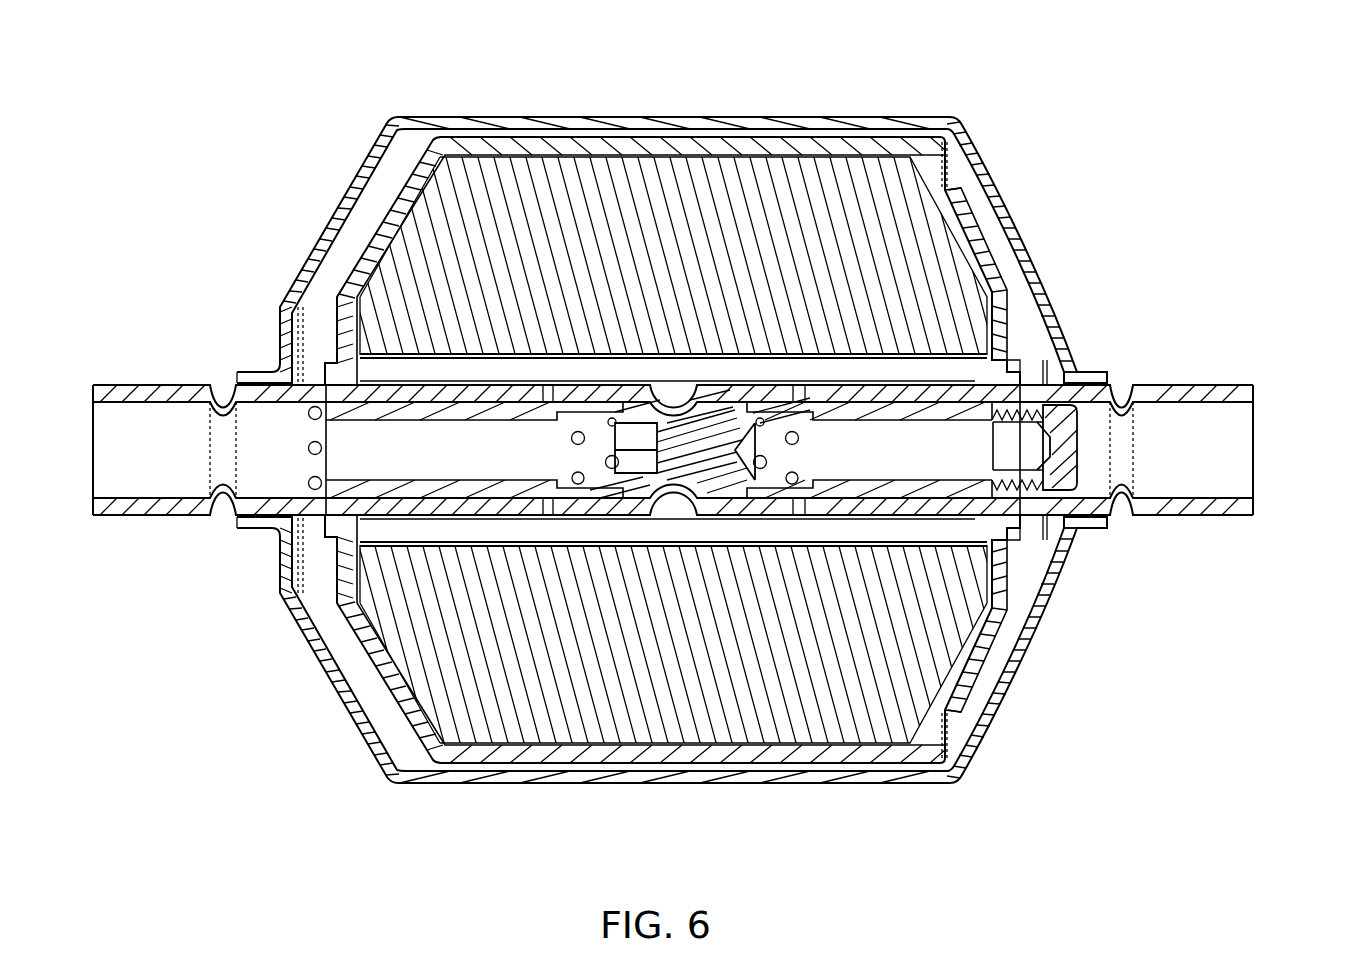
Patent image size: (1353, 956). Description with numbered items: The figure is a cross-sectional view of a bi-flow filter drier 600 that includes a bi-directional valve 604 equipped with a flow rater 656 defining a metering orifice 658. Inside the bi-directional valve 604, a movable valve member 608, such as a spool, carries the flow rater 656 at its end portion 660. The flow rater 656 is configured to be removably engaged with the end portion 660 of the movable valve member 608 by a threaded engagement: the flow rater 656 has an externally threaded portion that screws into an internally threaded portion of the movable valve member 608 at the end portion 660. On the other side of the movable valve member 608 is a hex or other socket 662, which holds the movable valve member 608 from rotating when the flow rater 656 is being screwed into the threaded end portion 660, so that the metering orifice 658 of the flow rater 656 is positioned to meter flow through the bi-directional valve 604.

The bi-flow filter drier 600 is at (180, 76).
The bi-directional valve 604 is at (702, 507).
The movable valve member 608 is at (962, 490).
The flow rater 656 is at (1077, 385).
The metering orifice 658 is at (1065, 447).
The end portion 660 is at (1030, 385).
The socket 662 is at (637, 442).